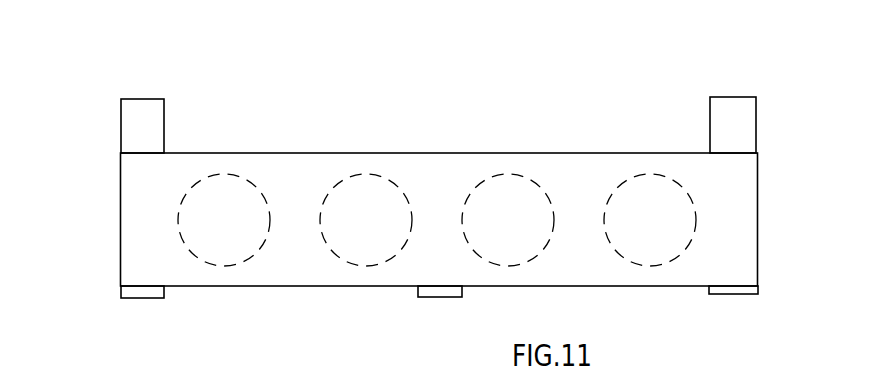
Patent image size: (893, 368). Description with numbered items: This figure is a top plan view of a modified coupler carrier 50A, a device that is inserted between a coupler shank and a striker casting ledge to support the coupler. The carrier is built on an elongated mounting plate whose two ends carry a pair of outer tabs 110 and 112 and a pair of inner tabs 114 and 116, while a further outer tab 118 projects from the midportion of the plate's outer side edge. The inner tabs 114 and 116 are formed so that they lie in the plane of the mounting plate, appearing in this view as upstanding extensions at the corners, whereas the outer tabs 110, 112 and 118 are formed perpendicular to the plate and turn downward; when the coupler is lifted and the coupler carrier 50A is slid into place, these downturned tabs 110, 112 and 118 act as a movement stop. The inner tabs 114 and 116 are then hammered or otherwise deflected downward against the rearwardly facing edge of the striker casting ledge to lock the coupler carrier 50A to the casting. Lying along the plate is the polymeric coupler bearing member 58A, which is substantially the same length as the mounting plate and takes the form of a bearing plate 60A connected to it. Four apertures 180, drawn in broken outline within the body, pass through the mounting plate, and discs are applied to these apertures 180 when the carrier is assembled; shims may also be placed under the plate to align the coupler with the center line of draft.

The coupler carrier 50A is at (112, 215).
The inner tab 114 is at (155, 116).
The inner tab 116 is at (737, 128).
The outer tab 110 is at (150, 298).
The outer tab 118 is at (441, 297).
The outer tab 112 is at (742, 294).
The polymeric coupler bearing member 58A is at (322, 165).
The bearing plate 60A is at (488, 165).
The apertures 180 is at (360, 247).